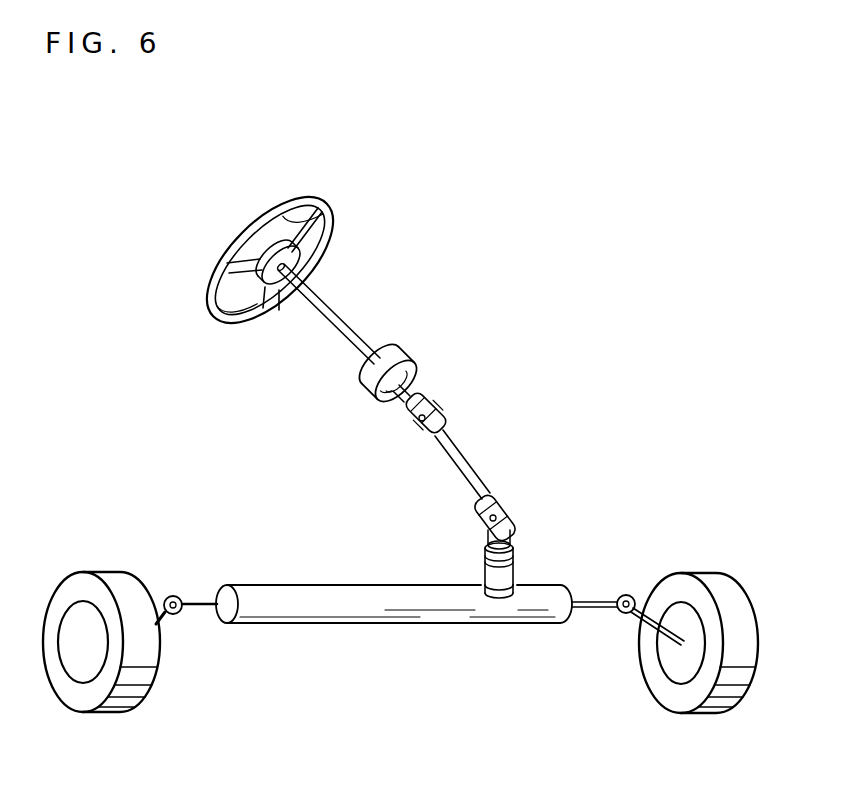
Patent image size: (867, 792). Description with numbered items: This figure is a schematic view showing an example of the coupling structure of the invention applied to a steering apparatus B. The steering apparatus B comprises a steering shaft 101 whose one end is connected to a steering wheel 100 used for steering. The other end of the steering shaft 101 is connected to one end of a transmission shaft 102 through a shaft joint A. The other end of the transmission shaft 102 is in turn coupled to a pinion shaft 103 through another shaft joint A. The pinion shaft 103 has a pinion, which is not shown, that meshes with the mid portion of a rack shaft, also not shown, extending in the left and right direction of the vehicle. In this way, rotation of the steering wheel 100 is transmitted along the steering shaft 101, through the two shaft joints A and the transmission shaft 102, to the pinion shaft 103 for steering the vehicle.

The steering wheel 100 is at (334, 219).
The steering shaft 101 is at (322, 327).
The transmission shaft 102 is at (475, 456).
The pinion shaft 103 is at (503, 562).
The shaft joint A is at (436, 391).
The steering apparatus B is at (390, 338).